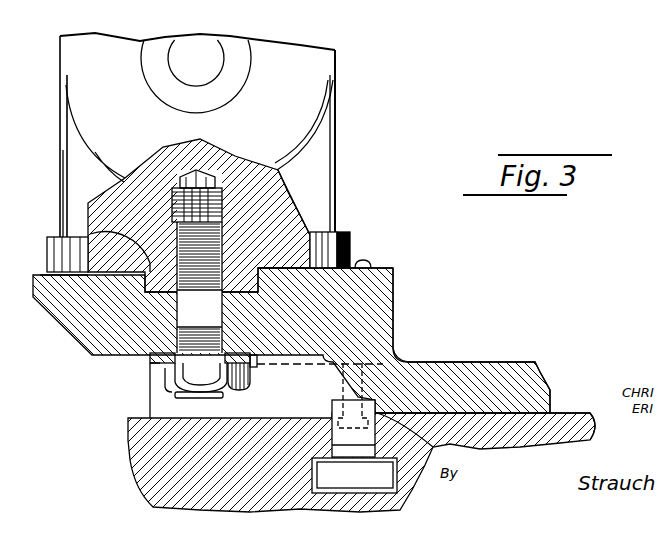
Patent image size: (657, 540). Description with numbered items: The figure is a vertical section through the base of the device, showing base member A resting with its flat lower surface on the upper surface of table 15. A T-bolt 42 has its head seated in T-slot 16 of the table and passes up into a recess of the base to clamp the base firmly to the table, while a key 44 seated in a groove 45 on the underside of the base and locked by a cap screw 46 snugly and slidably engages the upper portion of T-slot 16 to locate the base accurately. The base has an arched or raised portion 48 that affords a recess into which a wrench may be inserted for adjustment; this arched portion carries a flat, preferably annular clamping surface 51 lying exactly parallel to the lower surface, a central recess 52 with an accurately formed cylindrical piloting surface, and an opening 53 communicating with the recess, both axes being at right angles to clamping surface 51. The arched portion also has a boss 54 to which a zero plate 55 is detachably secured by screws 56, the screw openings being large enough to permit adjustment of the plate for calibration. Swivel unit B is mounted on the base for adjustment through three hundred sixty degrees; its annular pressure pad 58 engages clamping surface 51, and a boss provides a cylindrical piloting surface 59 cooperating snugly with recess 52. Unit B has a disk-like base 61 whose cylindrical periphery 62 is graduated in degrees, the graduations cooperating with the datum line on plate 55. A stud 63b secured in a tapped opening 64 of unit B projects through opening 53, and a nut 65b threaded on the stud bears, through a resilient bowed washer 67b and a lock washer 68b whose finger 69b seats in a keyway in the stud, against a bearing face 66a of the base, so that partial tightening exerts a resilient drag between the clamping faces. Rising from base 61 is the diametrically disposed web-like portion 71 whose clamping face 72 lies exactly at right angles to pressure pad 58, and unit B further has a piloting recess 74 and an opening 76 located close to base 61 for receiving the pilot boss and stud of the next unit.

The piloting recess 74 is at (242, 50).
The opening 76 is at (172, 52).
The clamping face 72 is at (328, 73).
The swivel unit B is at (343, 138).
The web-like portion 71 is at (60, 98).
The disk-like base 61 is at (62, 196).
The cylindrical periphery 62 is at (50, 242).
The clamping surface 51 is at (55, 278).
The piloting surface 59 is at (128, 220).
The tapped opening 64 is at (240, 163).
The stud 63b is at (286, 202).
The pressure pad 58 is at (345, 248).
The screws 56 is at (376, 260).
The zero plate 55 is at (393, 268).
The boss 54 is at (390, 288).
The opening 53 is at (238, 313).
The arched portion 48 is at (64, 318).
The recess 52 is at (125, 375).
The bearing face 66a is at (153, 374).
The nut 65b is at (163, 388).
The finger 69b is at (180, 364).
The resilient washer 67b is at (240, 390).
The lock washer 68b is at (260, 366).
The keys 44 is at (331, 407).
The T-bolts 42 is at (385, 478).
The groove 45 is at (430, 447).
The cap screws 46 is at (398, 358).
The base member A is at (527, 360).
The table 15 is at (584, 410).
The T-slot 16 is at (354, 497).